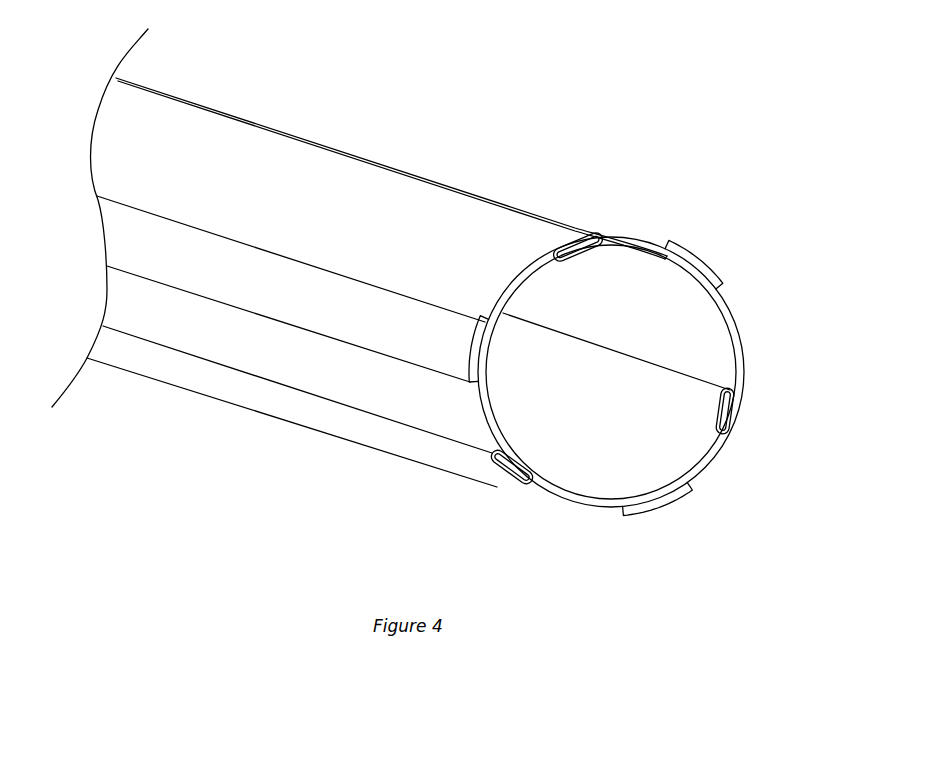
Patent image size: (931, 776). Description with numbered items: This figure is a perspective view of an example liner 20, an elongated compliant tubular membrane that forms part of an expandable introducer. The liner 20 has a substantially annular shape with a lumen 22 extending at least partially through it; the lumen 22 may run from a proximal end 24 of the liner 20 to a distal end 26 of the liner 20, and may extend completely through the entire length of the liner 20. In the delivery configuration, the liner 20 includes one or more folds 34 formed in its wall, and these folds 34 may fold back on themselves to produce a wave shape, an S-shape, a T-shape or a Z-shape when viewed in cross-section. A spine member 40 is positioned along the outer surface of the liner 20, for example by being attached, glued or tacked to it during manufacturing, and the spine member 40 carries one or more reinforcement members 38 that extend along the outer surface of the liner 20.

The liner 20 is at (593, 50).
The lumen 22 is at (672, 442).
The proximal end 24 is at (180, 78).
The distal end 26 is at (672, 227).
The folds 34 is at (562, 230).
The reinforcement member 38 is at (278, 268).
The spine member 40 is at (312, 342).